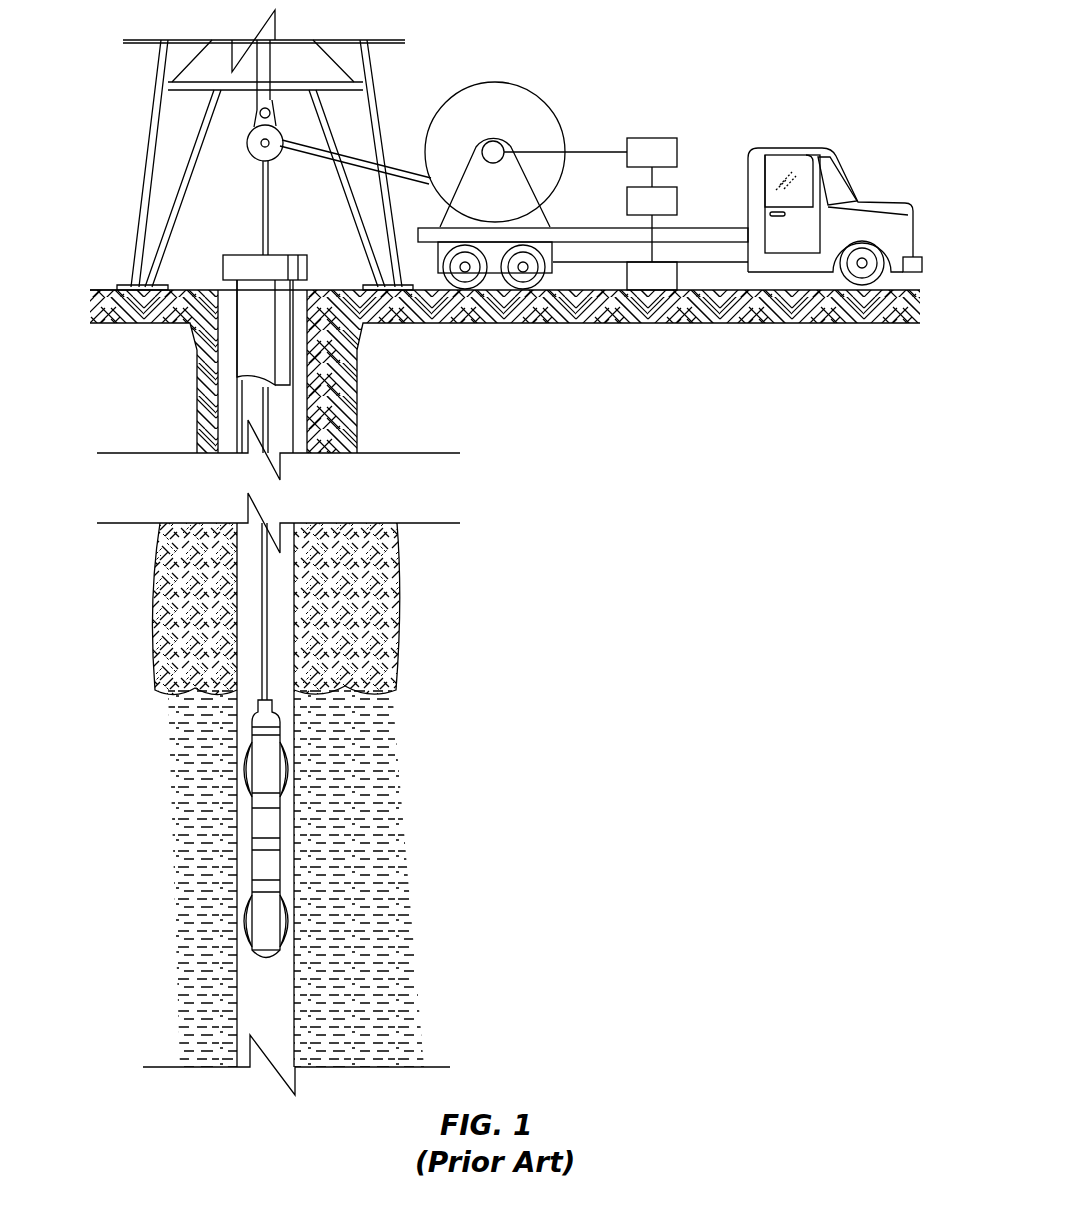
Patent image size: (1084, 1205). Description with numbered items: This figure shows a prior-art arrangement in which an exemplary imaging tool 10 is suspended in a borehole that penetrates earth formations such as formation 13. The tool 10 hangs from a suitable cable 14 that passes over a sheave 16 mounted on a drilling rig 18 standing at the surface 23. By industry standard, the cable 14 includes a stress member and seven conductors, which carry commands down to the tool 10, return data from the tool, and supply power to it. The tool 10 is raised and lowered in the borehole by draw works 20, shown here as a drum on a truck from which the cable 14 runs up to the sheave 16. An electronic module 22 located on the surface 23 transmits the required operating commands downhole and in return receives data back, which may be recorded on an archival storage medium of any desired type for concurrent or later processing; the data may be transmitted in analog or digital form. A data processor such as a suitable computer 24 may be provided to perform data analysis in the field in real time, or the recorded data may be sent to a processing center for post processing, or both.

The imaging tool 10 is at (282, 824).
The earth formation 13 is at (432, 644).
The cable 14 is at (262, 230).
The sheave 16 is at (247, 143).
The drilling rig 18 is at (152, 92).
The draw works 20 is at (493, 82).
The electronic module 22 is at (660, 138).
The surface 23 is at (106, 290).
The computer 24 is at (678, 187).